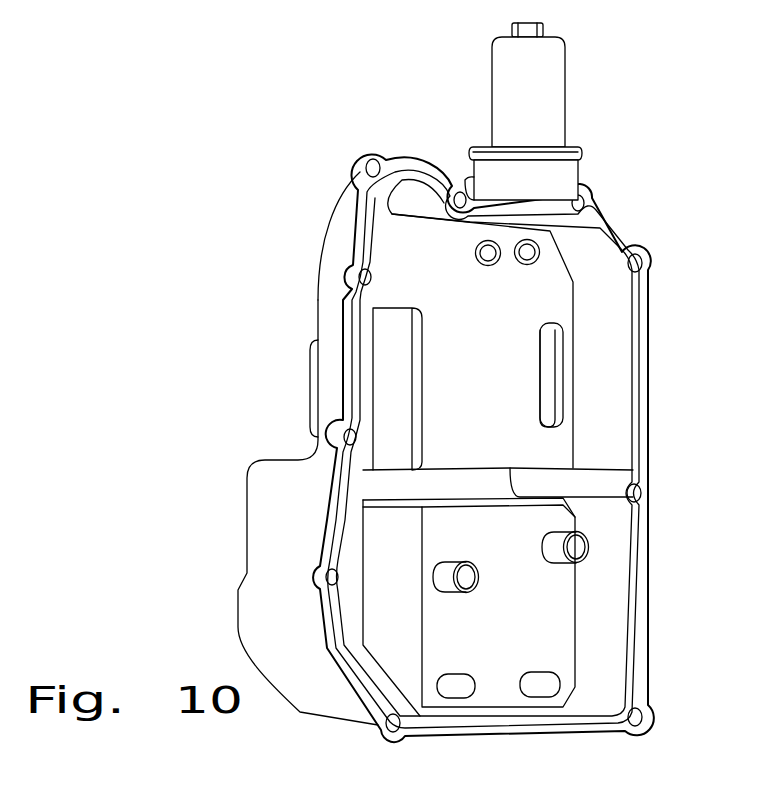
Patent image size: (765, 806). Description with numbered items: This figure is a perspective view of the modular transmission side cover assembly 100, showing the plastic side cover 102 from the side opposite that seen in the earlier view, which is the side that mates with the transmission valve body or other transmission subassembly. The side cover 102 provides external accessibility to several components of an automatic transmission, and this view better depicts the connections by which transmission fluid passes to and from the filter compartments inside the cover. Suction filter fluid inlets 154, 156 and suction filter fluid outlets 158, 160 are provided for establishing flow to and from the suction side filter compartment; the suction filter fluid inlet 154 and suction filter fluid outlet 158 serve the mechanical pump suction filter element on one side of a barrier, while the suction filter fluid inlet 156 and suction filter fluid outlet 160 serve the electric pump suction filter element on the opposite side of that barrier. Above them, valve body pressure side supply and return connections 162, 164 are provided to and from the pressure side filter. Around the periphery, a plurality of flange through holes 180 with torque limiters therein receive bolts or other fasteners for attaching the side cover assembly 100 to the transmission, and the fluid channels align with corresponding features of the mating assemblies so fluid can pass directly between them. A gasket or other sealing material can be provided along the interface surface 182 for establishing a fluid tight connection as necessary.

The modular transmission side cover assembly 100 is at (284, 181).
The plastic side cover 102 is at (319, 298).
The suction filter fluid inlet 154 is at (539, 687).
The suction filter fluid inlet 156 is at (455, 688).
The suction filter fluid outlet 158 is at (580, 548).
The suction filter fluid outlet 160 is at (468, 578).
The valve body pressure side supply and return connection 162 is at (528, 251).
The valve body pressure side supply and return connection 164 is at (488, 260).
The flange through hole 180 is at (371, 160).
The interface surface 182 is at (366, 350).